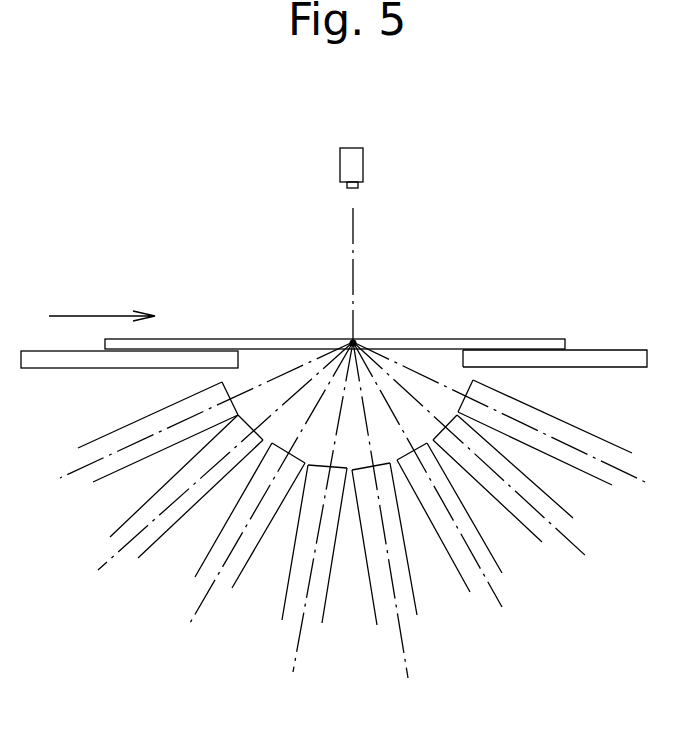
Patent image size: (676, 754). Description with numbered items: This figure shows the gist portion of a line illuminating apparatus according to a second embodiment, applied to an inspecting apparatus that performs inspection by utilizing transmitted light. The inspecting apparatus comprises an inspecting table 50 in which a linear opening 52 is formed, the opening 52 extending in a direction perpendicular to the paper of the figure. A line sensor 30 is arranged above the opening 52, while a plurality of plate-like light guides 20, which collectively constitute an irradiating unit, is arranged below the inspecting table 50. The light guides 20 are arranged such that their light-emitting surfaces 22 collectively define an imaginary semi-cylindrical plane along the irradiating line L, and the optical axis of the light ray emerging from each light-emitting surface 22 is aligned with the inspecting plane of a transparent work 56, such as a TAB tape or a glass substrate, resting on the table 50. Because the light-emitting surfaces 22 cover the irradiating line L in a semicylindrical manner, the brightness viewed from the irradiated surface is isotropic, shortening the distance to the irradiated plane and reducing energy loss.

The plate-like light guides 20 is at (115, 473).
The light-emitting surfaces 22 is at (232, 381).
The line sensor 30 is at (363, 163).
The inspecting table 50 is at (610, 350).
The linear opening 52 is at (462, 352).
The transparent work 56 is at (277, 339).
The irradiating line L is at (355, 341).